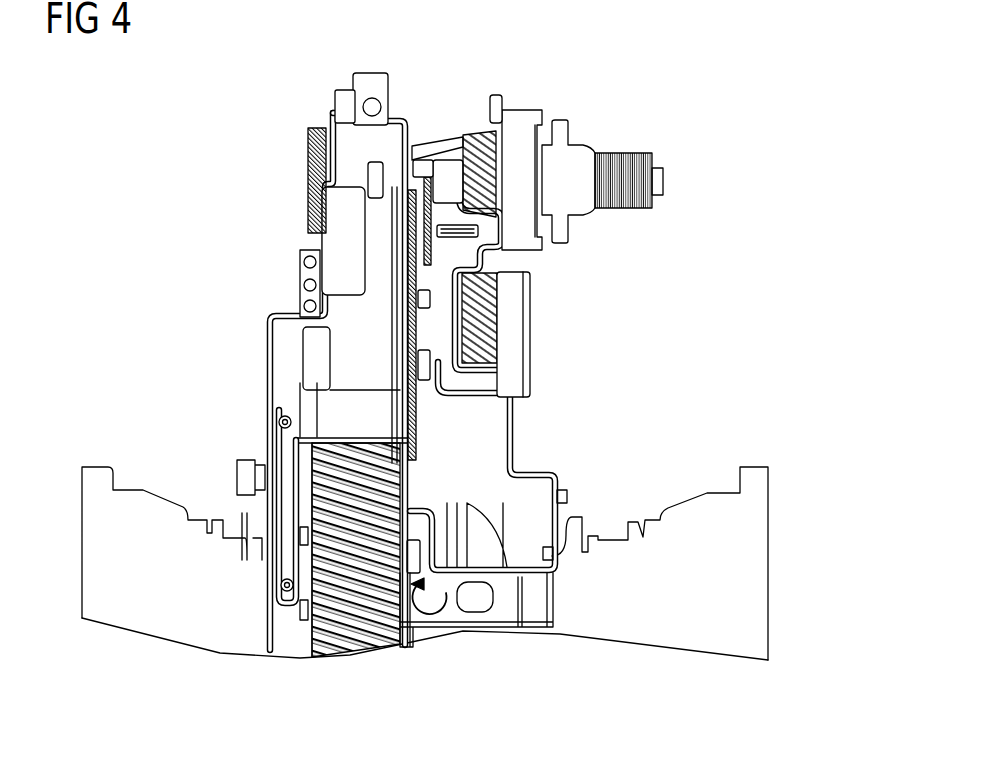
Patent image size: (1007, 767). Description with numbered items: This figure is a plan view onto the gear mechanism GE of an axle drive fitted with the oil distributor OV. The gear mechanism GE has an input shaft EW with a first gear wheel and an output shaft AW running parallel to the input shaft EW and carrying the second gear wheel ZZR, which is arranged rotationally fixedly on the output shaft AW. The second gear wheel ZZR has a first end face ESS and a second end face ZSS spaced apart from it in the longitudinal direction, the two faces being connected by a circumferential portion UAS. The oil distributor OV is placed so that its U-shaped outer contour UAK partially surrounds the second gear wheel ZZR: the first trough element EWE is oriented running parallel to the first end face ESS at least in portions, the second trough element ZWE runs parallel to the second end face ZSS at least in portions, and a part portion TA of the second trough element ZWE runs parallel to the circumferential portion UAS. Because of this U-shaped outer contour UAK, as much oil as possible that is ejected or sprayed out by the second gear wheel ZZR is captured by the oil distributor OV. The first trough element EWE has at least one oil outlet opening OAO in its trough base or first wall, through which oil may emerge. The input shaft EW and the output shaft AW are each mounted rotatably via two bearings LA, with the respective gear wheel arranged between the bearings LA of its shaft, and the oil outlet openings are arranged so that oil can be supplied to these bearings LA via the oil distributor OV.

The gear mechanism GE is at (150, 142).
The oil distributor OV is at (292, 210).
The bearing LA is at (343, 140).
The oil outlet opening OAO is at (483, 222).
The input shaft EW is at (665, 181).
The part portion TA is at (360, 437).
The second trough element ZWE is at (337, 413).
The circumferential portion UAS is at (329, 455).
The first trough element EWE is at (475, 435).
The second end face ZSS is at (298, 547).
The second gear wheel ZZR is at (350, 628).
The U-shaped outer contour UAK is at (358, 510).
The first end face ESS is at (435, 617).
The output shaft AW is at (636, 597).